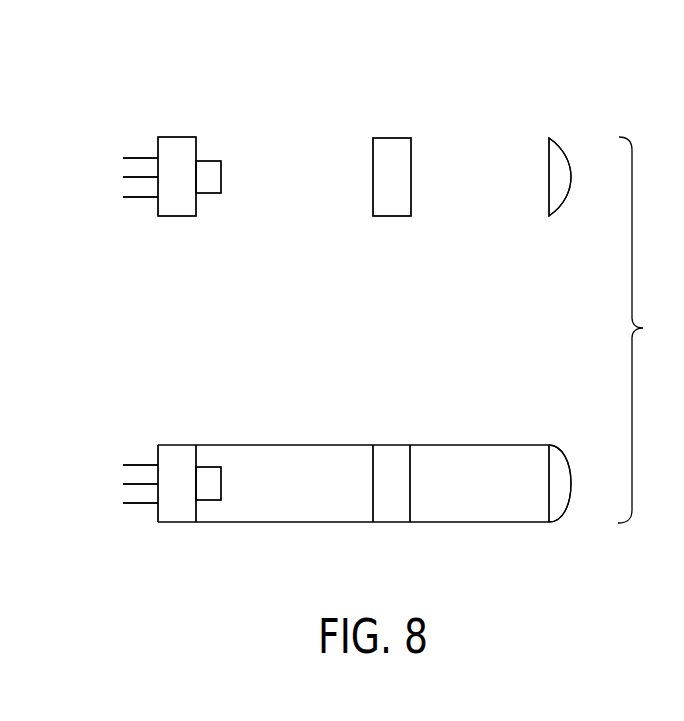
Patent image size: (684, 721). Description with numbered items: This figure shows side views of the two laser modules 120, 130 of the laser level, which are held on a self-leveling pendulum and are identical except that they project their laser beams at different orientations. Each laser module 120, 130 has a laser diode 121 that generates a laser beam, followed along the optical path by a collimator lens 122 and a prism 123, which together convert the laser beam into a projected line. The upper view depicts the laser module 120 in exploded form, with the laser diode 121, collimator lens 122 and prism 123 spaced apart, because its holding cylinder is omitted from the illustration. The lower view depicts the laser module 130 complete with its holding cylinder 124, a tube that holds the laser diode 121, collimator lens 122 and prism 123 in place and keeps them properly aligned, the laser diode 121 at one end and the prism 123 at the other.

The laser module 120 is at (110, 101).
The laser diode 121 is at (176, 137).
The collimator lens 122 is at (392, 138).
The prism 123 is at (550, 137).
The holding cylinder 124 is at (285, 443).
The laser module 130 is at (110, 416).